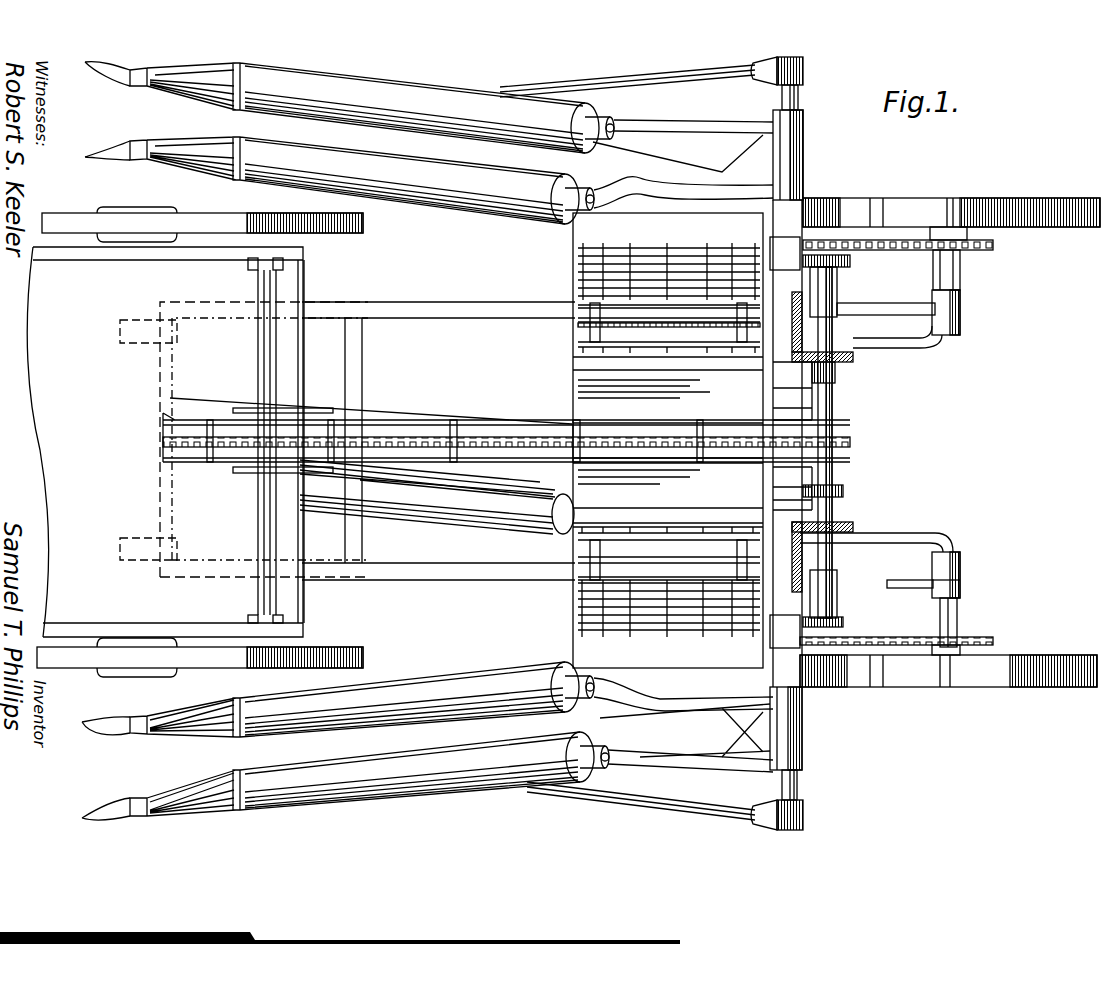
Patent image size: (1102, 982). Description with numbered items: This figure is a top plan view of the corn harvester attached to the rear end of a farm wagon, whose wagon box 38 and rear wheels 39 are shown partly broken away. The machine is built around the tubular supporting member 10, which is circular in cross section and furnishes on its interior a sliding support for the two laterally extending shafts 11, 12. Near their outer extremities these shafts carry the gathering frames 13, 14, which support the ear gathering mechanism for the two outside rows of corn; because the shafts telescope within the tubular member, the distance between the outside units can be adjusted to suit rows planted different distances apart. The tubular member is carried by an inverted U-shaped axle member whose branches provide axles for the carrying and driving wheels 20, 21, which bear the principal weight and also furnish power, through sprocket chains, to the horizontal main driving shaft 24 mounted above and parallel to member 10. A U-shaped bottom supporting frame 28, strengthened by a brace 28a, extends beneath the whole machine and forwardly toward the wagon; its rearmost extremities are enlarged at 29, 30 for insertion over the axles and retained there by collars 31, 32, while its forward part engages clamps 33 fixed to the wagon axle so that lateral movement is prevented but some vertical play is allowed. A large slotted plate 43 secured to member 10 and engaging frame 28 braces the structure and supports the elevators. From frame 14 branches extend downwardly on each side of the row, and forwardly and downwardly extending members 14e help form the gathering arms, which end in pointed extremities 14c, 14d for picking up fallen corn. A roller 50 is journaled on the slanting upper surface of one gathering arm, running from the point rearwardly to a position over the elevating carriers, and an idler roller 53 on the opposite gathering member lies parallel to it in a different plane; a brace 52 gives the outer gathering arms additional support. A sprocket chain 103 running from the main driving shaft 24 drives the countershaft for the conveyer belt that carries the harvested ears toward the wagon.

The tubular supporting member 10 is at (778, 242).
The shaft 11 is at (795, 790).
The shaft 12 is at (800, 97).
The gathering frame 13 is at (800, 713).
The gathering frame 14 is at (797, 137).
The pointed extremity 14c is at (105, 76).
The pointed extremity 14d is at (107, 150).
The forwardly and downwardly extending member 14e is at (678, 130).
The carrying and driving wheel 20 is at (973, 677).
The carrying and driving wheel 21 is at (1003, 204).
The horizontal shaft 24 is at (820, 455).
The bottom supporting frame 28 is at (492, 300).
The brace 28a is at (360, 348).
The enlarged extremity 29 is at (960, 313).
The enlarged extremity 30 is at (947, 563).
The collar 31 is at (960, 288).
The collar 32 is at (958, 592).
The clamp 33 is at (133, 343).
The wagon box 38 is at (37, 367).
The rear wheel 39 is at (350, 233).
The plate 43 is at (765, 428).
The roller 50 is at (382, 190).
The brace 52 is at (607, 84).
The idler roller 53 is at (417, 85).
The sprocket chain 103 is at (842, 488).